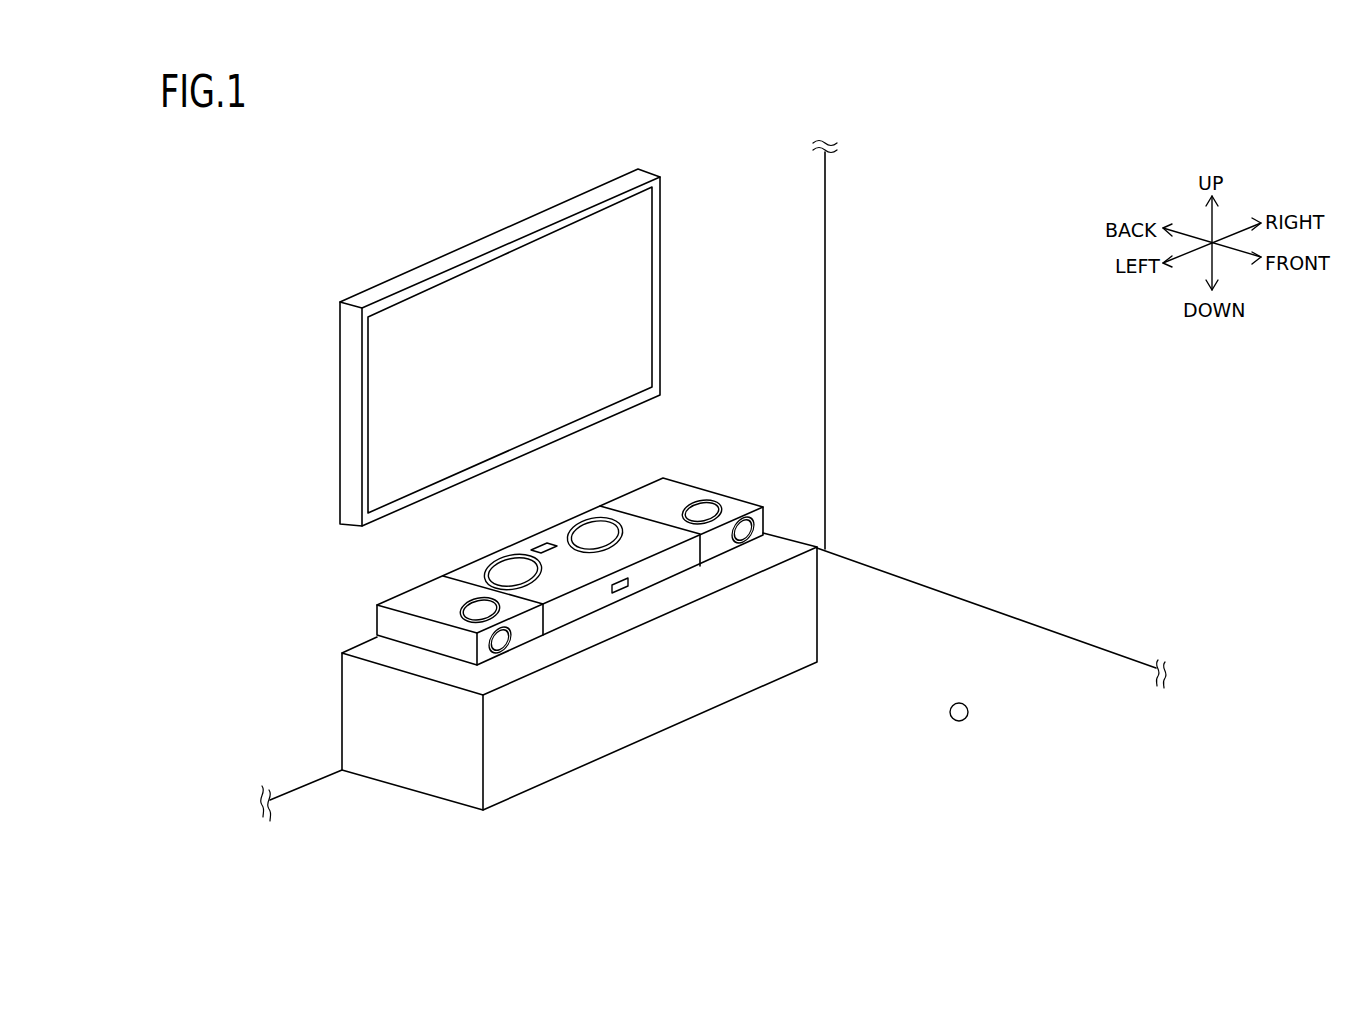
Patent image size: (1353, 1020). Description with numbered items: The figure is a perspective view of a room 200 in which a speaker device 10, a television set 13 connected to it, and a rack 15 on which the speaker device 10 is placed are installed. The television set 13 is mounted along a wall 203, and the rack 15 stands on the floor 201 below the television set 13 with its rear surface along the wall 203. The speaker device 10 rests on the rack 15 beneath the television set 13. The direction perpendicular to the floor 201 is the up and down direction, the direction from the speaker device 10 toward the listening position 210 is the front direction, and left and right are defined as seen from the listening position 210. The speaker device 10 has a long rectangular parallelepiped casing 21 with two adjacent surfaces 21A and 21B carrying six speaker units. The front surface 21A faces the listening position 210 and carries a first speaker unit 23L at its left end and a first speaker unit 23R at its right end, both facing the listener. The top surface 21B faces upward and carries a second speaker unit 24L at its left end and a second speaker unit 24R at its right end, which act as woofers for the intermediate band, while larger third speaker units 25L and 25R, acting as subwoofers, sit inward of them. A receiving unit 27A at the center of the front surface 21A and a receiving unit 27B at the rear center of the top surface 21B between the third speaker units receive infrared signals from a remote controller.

The room 200 is at (277, 277).
The television set 13 is at (640, 302).
The speaker device 10 is at (706, 396).
The casing 21 is at (683, 476).
The surface 21A is at (758, 518).
The surface 21B is at (410, 601).
The second speaker unit 24L is at (472, 604).
The second speaker unit 24R is at (703, 510).
The third speaker unit 25L is at (508, 572).
The third speaker unit 25R is at (588, 530).
The receiving unit 27A is at (628, 588).
The receiving unit 27B is at (545, 548).
The first speaker unit 23L is at (503, 656).
The first speaker unit 23R is at (753, 544).
The rack 15 is at (793, 610).
The listening position 210 is at (958, 702).
The floor 201 is at (1068, 665).
The wall 203 is at (805, 253).